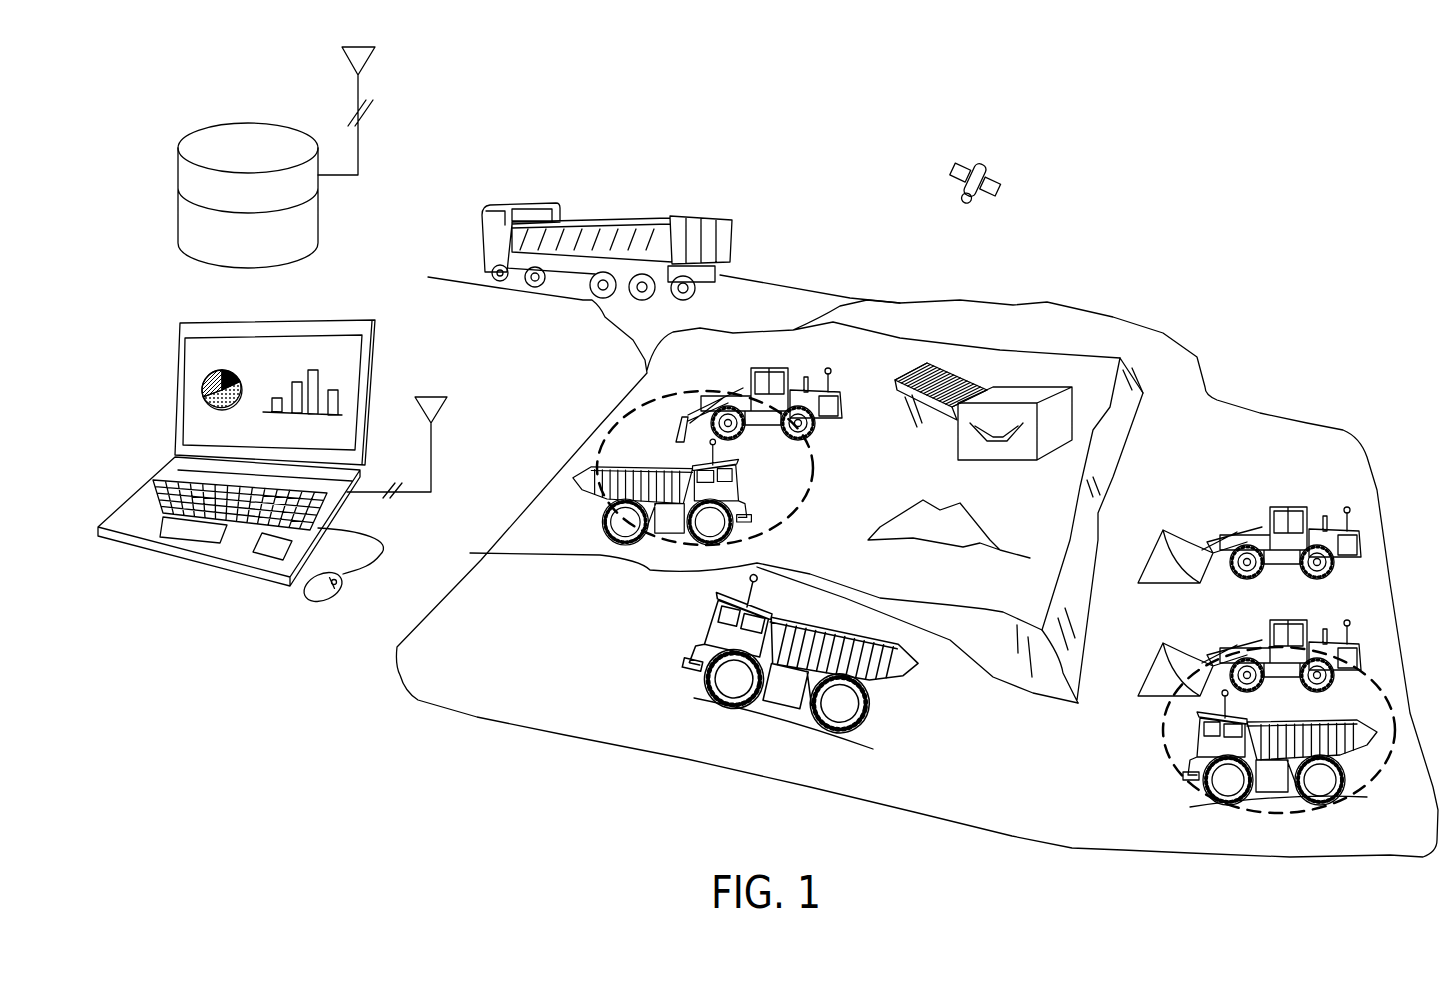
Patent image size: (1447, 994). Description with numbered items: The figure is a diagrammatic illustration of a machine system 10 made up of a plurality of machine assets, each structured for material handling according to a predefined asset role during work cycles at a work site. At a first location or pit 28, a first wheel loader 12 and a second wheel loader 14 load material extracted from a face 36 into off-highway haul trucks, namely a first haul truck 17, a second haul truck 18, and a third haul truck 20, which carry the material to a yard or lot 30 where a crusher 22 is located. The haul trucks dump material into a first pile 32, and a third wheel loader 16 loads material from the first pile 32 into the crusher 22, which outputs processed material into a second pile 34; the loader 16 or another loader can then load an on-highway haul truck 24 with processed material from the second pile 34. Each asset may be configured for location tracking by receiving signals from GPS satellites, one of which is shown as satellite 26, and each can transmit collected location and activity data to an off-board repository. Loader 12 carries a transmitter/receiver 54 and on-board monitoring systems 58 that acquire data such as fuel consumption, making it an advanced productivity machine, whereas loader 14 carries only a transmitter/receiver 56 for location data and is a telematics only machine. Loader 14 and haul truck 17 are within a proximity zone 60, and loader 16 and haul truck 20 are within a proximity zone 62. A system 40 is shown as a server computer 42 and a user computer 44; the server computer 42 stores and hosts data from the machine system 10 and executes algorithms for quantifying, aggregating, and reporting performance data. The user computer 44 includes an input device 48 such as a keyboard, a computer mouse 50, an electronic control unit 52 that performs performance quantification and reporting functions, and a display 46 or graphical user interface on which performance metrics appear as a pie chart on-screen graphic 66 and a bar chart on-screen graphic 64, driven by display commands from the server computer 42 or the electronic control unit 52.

The machine system 10 is at (1382, 332).
The first loader machine or wheel loader 12 is at (1284, 521).
The second loader machine or wheel loader 14 is at (1283, 635).
The third loader machine or wheel loader 16 is at (812, 363).
The first off-highway haul truck 17 is at (1363, 715).
The second off-highway haul truck 18 is at (876, 721).
The third off-highway haul truck 20 is at (755, 472).
The crusher 22 is at (1047, 372).
The on-highway haul truck 24 is at (742, 228).
The global positioning system satellite 26 is at (995, 168).
The first location or pit 28 is at (1195, 490).
The yard or lot 30 is at (565, 495).
The first pile 32 is at (977, 513).
The second pile 34 is at (887, 358).
The face 36 is at (1112, 433).
The system 40 is at (239, 157).
The server computer 42 is at (320, 215).
The user computer 44 is at (259, 448).
The display or graphical user interface 46 is at (278, 377).
The input device 48 is at (180, 494).
The computer mouse 50 is at (345, 577).
The electronic control unit 52 is at (250, 551).
The transmitter/receiver 54 is at (1345, 495).
The transmitter/receiver 56 is at (1343, 609).
The on-board monitoring systems 58 is at (1381, 543).
The proximity zone 60 is at (1163, 733).
The proximity zone 62 is at (813, 487).
The bar chart on-screen graphic 64 is at (345, 370).
The pie chart on-screen graphic 66 is at (205, 365).